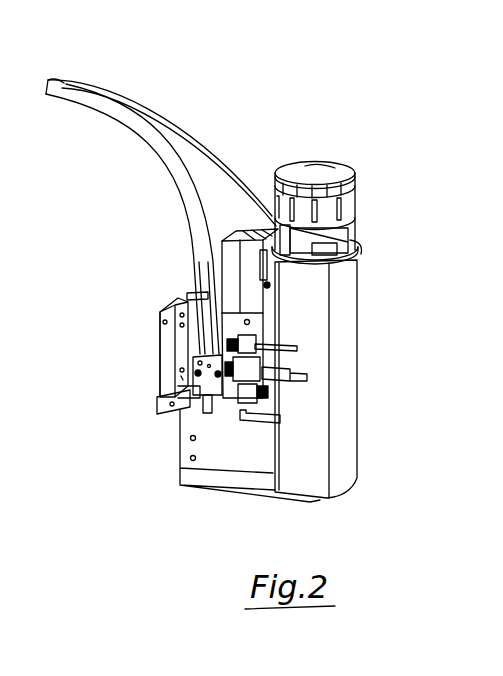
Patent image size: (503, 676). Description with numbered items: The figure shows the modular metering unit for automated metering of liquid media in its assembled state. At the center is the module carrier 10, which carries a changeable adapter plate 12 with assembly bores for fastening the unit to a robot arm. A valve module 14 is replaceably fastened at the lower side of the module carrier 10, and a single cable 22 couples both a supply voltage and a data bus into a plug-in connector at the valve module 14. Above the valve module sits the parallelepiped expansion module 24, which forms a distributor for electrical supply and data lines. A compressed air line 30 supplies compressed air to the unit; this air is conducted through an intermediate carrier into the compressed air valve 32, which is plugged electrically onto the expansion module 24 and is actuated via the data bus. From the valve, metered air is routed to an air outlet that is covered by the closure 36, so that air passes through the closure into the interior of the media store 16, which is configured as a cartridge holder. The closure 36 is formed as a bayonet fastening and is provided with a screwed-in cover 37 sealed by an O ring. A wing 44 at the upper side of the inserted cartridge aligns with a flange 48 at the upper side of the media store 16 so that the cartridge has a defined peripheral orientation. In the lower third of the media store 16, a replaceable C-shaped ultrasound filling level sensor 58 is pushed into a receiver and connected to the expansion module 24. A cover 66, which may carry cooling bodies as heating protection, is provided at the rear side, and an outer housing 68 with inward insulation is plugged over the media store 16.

The module carrier 10 is at (165, 407).
The adapter plate 12 is at (165, 340).
The valve module 14 is at (242, 457).
The media store 16 is at (379, 220).
The cable 22 is at (184, 172).
The expansion module 24 is at (182, 440).
The compressed air line 30 is at (203, 143).
The compressed air valve 32 is at (247, 255).
The closure 36 is at (352, 203).
The cover 37 is at (313, 168).
The wing 44 is at (366, 226).
The flange 48 is at (362, 258).
The filling level sensor 58 is at (305, 373).
The cover 66 is at (195, 294).
The outer housing 68 is at (343, 467).